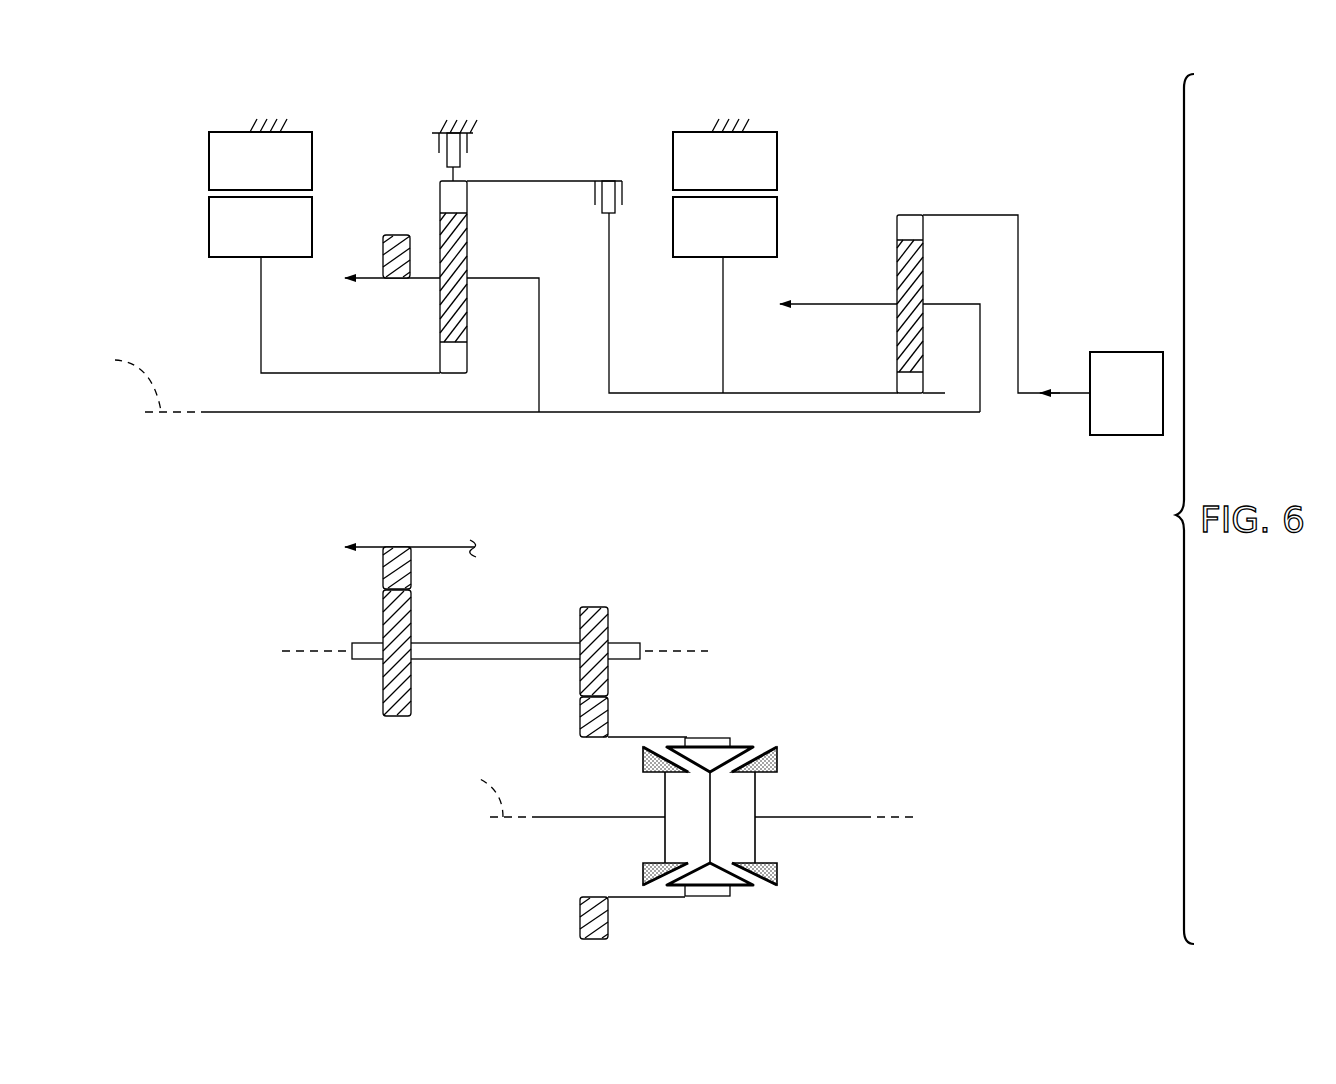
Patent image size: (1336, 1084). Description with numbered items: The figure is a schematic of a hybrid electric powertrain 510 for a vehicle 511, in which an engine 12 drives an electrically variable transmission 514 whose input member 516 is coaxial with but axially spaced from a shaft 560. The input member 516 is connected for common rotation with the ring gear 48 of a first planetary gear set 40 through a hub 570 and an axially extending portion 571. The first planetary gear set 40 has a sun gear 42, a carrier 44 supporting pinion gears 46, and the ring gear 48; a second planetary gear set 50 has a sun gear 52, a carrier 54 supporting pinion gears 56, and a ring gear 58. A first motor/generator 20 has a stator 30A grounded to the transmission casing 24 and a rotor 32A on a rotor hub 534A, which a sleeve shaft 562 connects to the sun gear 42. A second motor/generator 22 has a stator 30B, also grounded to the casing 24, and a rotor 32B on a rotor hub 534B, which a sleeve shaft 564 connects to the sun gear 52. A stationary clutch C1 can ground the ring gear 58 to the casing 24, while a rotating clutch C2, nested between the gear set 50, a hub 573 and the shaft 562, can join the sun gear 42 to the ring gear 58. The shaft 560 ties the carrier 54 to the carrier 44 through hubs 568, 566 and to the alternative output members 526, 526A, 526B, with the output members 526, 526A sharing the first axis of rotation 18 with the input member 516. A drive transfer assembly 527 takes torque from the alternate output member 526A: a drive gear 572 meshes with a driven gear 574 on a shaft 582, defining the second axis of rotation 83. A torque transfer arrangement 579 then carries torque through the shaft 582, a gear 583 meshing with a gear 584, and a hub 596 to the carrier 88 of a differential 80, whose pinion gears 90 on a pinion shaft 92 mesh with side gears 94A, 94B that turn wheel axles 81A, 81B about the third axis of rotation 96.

The engine 12 is at (1126, 393).
The first axis of rotation 18 is at (123, 381).
The first motor/generator 20 is at (655, 180).
The second motor/generator 22 is at (188, 200).
The transmission casing 24 is at (250, 125).
The stator 30A is at (725, 161).
The stator 30B is at (260, 161).
The rotor 32A is at (725, 227).
The rotor 32B is at (260, 227).
The first planetary gear set 40 is at (872, 336).
The sun gear 42 is at (925, 382).
The carrier 44 is at (950, 304).
The pinion gears 46 is at (897, 270).
The ring gear 48 is at (897, 225).
The second planetary gear set 50 is at (420, 300).
The sun gear 52 is at (469, 352).
The carrier 54 is at (502, 278).
The pinion gears 56 is at (469, 240).
The ring gear 58 is at (438, 183).
The stationary-type clutch C1 is at (489, 142).
The rotating-type clutch C2 is at (632, 212).
The differential 80 is at (808, 746).
The wheel axle 81A is at (583, 817).
The wheel axle 81B is at (845, 817).
The second axis of rotation 83 is at (316, 652).
The carrier 88 is at (738, 745).
The pinion gears 90 is at (740, 897).
The pinion shaft 92 is at (712, 800).
The side gear 94A is at (655, 775).
The side gear 94B is at (760, 775).
The third axis of rotation 96 is at (475, 791).
The powertrain 510 is at (888, 115).
The vehicle 511 is at (962, 130).
The electrically variable transmission 514 is at (187, 125).
The input member 516 is at (1067, 393).
The output member 526 is at (830, 302).
The alternate output member 526A is at (365, 276).
The alternative output member 526B is at (300, 412).
The drive transfer assembly 527 is at (727, 605).
The rotor hub 534A is at (723, 330).
The rotor hub 534B is at (261, 320).
The shaft 560 is at (641, 413).
The sleeve shaft 562 is at (672, 393).
The sleeve shaft 564 is at (325, 373).
The hub 566 is at (982, 358).
The hub 568 is at (539, 345).
The hub 570 is at (1020, 300).
The axial extending portion 571 is at (982, 215).
The drive member 572 is at (398, 235).
The hub 573 is at (609, 300).
The driven member 574 is at (383, 620).
The torque transfer arrangement 579 is at (730, 668).
The shaft 582 is at (512, 643).
The gear 583 is at (609, 628).
The gear 584 is at (609, 715).
The hub 596 is at (648, 737).